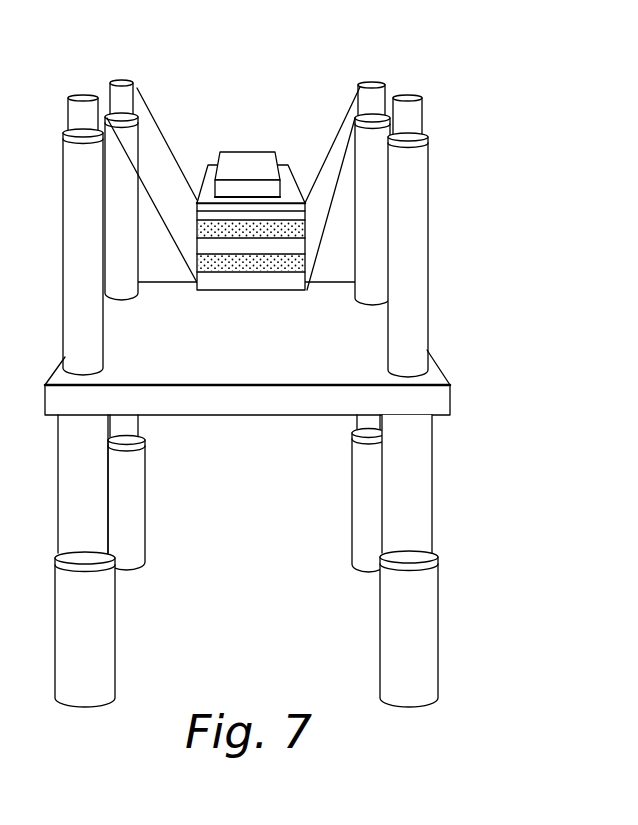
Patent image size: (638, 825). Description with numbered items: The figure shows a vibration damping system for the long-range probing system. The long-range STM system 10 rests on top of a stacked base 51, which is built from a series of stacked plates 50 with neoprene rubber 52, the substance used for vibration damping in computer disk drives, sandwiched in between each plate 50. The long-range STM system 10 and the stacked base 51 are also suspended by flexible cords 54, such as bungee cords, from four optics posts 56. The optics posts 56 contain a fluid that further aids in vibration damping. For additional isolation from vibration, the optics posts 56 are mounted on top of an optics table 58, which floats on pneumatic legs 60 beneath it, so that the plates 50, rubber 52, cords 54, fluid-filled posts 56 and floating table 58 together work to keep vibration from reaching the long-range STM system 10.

The long-range STM system 10 is at (249, 145).
The stacked plates 50 is at (207, 213).
The stacked base 51 is at (290, 158).
The neoprene rubber 52 is at (305, 226).
The flexible cords 54 is at (162, 131).
The optics posts 56 is at (123, 288).
The optics table 58 is at (450, 400).
The lower legs 60 is at (128, 493).